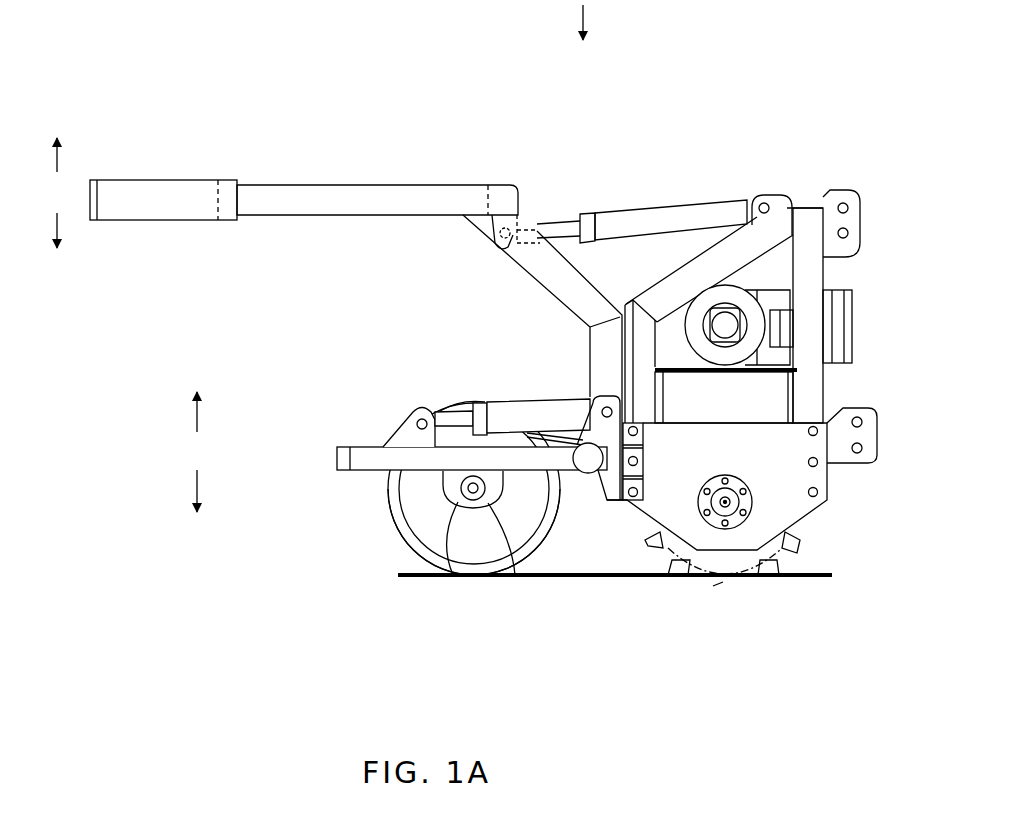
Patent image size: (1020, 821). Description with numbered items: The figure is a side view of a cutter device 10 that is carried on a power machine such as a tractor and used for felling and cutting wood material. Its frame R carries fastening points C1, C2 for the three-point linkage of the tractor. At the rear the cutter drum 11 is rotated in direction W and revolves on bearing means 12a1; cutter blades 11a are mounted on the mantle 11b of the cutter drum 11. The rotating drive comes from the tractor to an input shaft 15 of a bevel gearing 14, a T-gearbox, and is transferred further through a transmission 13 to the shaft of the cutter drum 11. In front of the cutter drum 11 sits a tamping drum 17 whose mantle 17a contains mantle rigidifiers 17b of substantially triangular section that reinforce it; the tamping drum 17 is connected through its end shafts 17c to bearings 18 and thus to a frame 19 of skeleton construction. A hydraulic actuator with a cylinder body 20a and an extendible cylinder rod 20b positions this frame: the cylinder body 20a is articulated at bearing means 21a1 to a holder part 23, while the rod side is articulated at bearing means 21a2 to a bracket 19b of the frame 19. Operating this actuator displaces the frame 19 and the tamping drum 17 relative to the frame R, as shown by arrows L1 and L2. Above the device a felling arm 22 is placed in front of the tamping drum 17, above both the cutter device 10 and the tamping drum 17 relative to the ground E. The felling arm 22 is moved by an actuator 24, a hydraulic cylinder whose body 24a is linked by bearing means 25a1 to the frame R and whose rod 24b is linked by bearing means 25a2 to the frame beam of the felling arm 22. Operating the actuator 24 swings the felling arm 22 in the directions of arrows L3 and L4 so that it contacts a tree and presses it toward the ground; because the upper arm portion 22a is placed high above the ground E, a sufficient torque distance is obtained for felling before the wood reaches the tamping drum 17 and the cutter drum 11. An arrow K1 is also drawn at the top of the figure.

The cutter device 10 is at (706, 90).
The cutter drum 11 is at (812, 549).
The cutter blades 11a is at (708, 575).
The mantle 11b is at (793, 523).
The bearing means 12a1 is at (745, 530).
The transmission 13 is at (672, 320).
The bevel gearing 14 is at (762, 288).
The input shaft 15 is at (777, 330).
The tamping drum 17 is at (372, 490).
The mantle of the tamping drum 17a is at (398, 512).
The mantle rigidifiers 17b is at (403, 538).
The end shafts 17c is at (516, 576).
The bearings 18 is at (454, 576).
The frame 19 is at (348, 446).
The bracket 19b is at (340, 460).
The cylinder body 20a is at (546, 412).
The cylinder rod 20b is at (457, 401).
The bearing means 21a1 is at (501, 392).
The bearing means 21a2 is at (414, 410).
The felling arm 22 is at (302, 178).
The upper arm portion 22a is at (355, 216).
The holder part 23 is at (598, 485).
The actuator 24 is at (608, 186).
The body of the hydraulic cylinder 24a is at (667, 210).
The rod 24b is at (528, 226).
The bearing means 25a1 is at (762, 202).
The bearing means 25a2 is at (490, 244).
The fastening point C1 is at (840, 186).
The fastening point C2 is at (842, 410).
The ground E is at (412, 578).
The force direction K1 is at (588, 23).
The arrow L1 is at (192, 418).
The arrow L2 is at (195, 490).
The arrow L3 is at (62, 160).
The arrow L4 is at (62, 238).
The frame R is at (868, 466).
The direction of rotation W is at (712, 446).